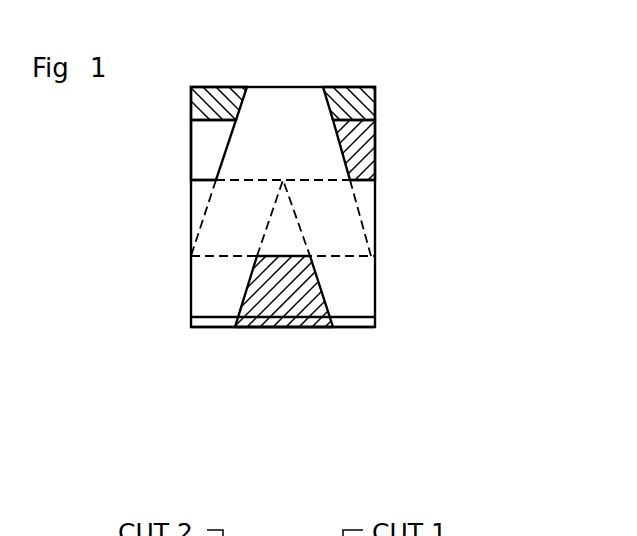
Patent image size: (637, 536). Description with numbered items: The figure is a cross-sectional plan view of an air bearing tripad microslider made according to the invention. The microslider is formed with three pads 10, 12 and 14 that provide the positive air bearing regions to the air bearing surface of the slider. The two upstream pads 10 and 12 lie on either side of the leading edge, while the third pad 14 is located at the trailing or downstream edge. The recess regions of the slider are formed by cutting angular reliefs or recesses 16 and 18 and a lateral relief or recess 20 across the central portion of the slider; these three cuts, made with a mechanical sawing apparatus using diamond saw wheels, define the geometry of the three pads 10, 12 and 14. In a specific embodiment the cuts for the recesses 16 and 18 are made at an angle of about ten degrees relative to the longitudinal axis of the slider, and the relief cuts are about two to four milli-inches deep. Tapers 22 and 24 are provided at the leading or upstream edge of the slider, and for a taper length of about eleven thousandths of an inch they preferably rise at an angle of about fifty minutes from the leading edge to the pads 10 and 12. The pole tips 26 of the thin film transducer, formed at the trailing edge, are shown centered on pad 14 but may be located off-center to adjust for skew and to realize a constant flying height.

The pad 10 is at (361, 190).
The pad 12 is at (383, 190).
The pad 14 is at (383, 208).
The angular relief 16 is at (150, 218).
The angular relief 18 is at (372, 218).
The lateral relief 20 is at (339, 263).
The taper 22 is at (345, 122).
The taper 24 is at (345, 122).
The pole tips 26 is at (283, 346).